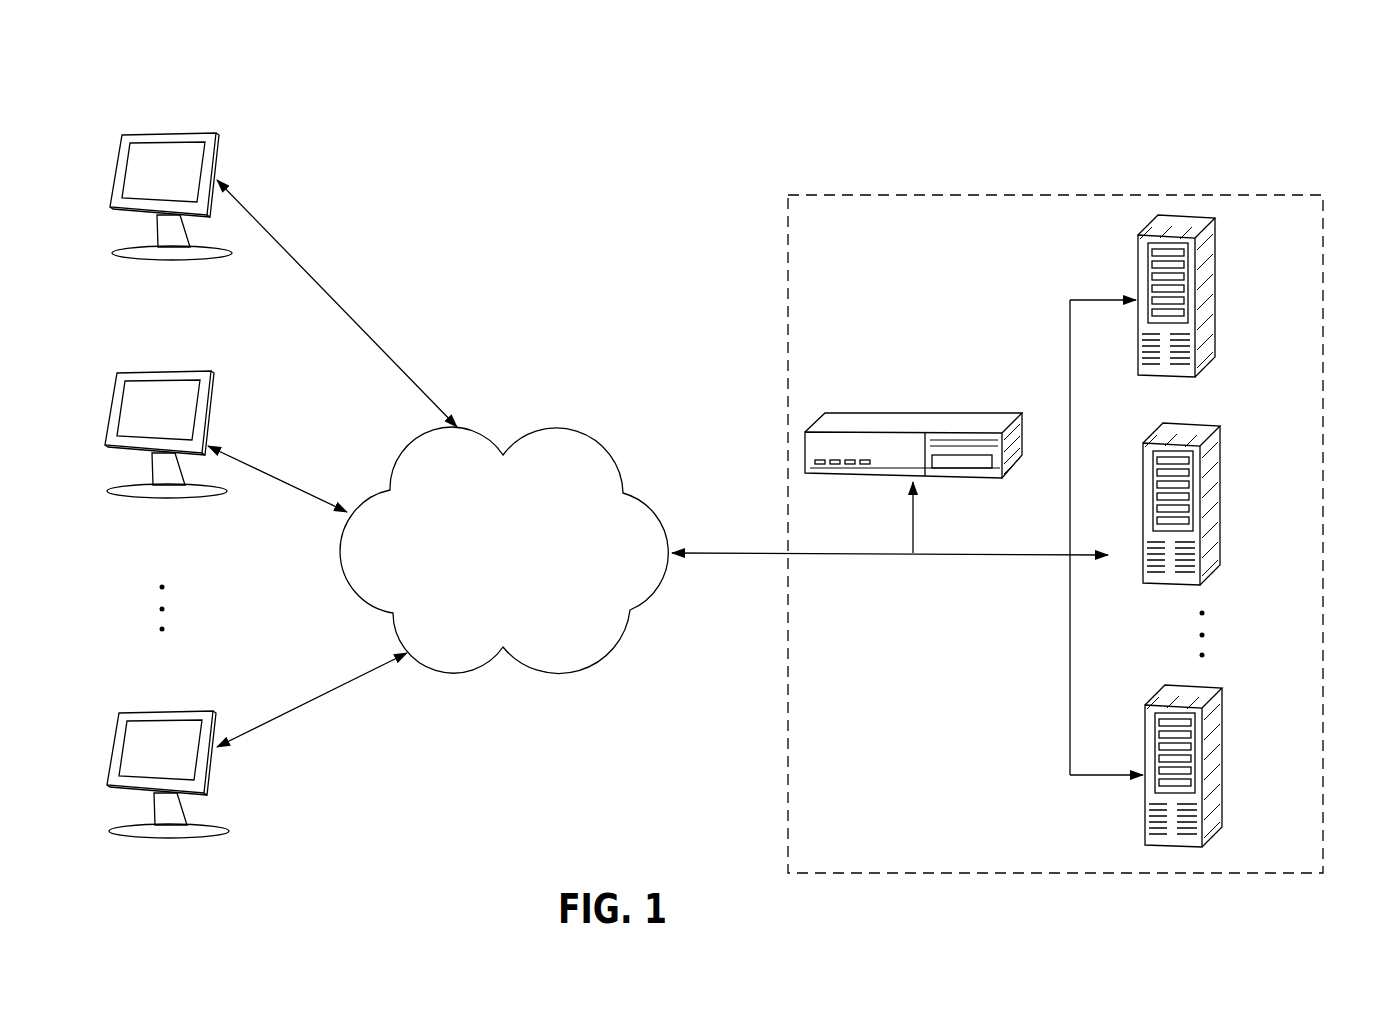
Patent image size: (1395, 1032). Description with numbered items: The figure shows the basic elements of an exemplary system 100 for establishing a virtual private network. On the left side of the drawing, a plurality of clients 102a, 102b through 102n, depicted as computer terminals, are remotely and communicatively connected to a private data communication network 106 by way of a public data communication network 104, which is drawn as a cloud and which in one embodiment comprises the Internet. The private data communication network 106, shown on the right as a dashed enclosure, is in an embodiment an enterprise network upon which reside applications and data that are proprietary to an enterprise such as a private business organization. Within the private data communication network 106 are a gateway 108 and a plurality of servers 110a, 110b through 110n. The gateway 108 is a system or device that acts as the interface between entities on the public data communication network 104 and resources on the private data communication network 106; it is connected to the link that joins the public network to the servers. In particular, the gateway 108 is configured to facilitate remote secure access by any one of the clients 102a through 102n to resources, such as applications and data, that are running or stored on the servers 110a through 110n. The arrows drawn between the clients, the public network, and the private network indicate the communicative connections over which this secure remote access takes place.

The system 100 is at (1240, 122).
The client 102a is at (203, 132).
The client 102b is at (215, 400).
The client 102n is at (208, 712).
The public data communication network 104 is at (550, 428).
The private data communication network 106 is at (1033, 195).
The gateway 108 is at (870, 413).
The server 110a is at (1218, 262).
The server 110b is at (1227, 472).
The server 110n is at (1227, 750).